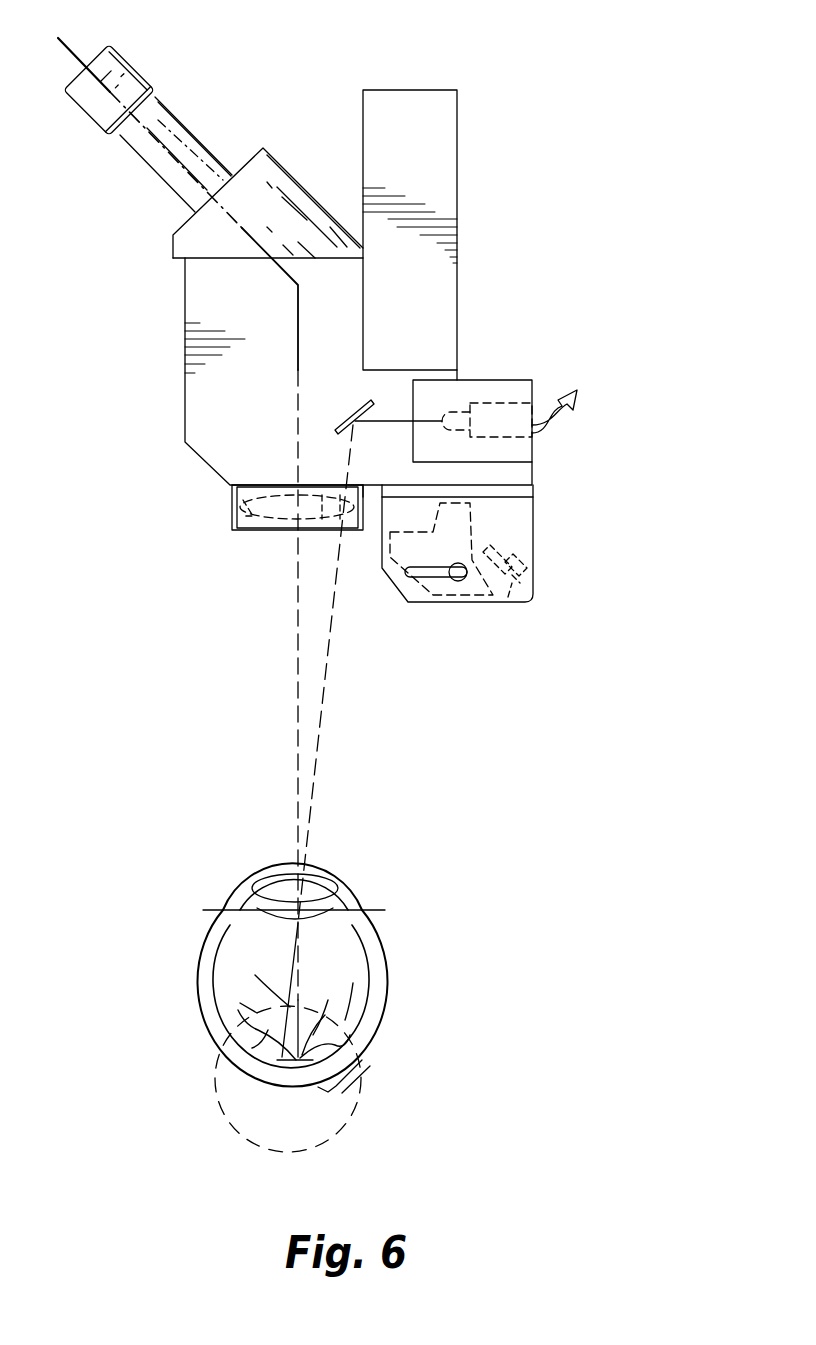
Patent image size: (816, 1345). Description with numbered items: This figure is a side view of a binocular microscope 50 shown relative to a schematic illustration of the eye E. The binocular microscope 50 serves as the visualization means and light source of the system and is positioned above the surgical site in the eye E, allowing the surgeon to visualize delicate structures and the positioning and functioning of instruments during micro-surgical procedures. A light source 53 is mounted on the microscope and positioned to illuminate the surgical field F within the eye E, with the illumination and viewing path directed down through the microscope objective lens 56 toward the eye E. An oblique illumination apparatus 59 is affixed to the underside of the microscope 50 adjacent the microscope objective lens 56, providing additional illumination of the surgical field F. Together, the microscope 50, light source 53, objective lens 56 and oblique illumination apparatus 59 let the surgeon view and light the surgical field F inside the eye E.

The binocular microscope 50 is at (537, 130).
The light source 53 is at (498, 403).
The microscope objective lens 56 is at (237, 530).
The oblique illumination apparatus 59 is at (435, 603).
The eye E is at (388, 970).
The surgical field F is at (291, 1137).